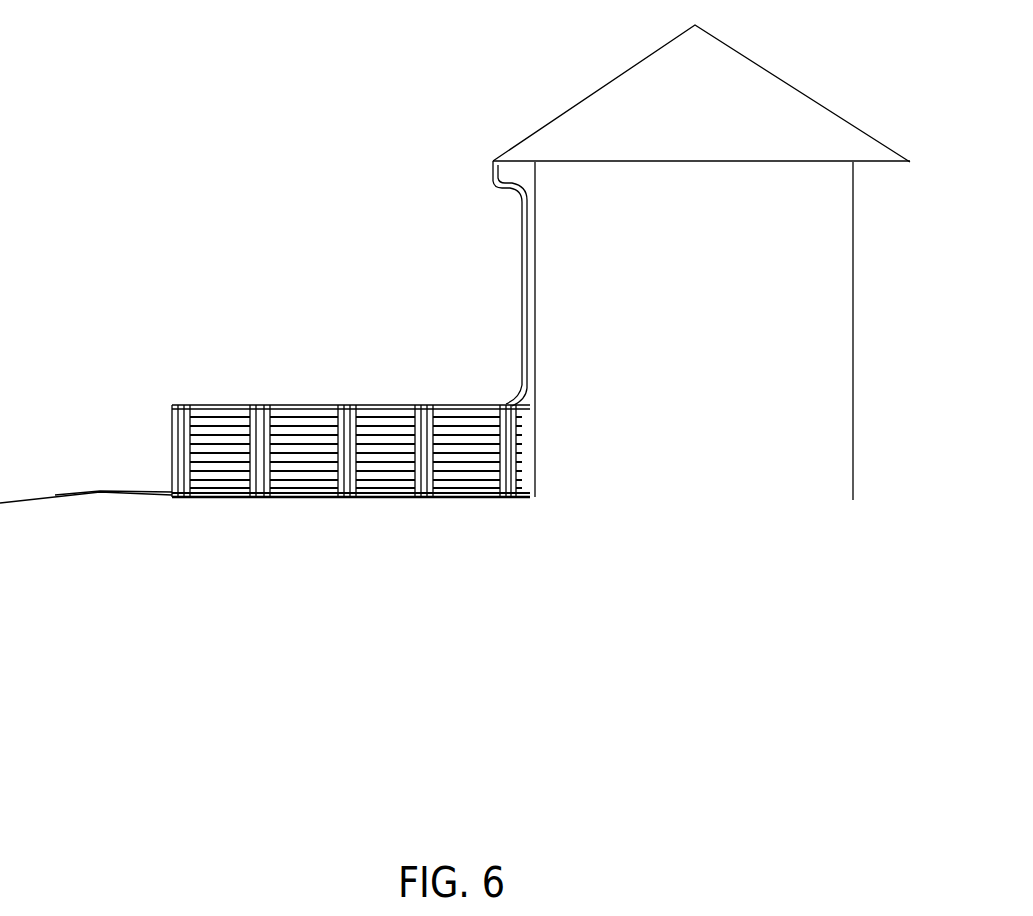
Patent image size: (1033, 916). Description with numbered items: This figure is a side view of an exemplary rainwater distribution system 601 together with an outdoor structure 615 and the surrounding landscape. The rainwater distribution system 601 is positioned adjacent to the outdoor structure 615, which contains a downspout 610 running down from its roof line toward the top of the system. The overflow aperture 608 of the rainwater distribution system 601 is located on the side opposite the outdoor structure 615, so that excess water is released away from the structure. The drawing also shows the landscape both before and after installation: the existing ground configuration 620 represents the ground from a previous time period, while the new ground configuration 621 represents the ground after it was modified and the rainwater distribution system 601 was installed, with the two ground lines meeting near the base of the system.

The rainwater distribution system 601 is at (292, 401).
The overflow aperture 608 is at (172, 450).
The downspout 610 is at (505, 400).
The outdoor structure 615 is at (555, 82).
The existing ground configuration 620 is at (135, 490).
The new ground configuration 621 is at (100, 492).